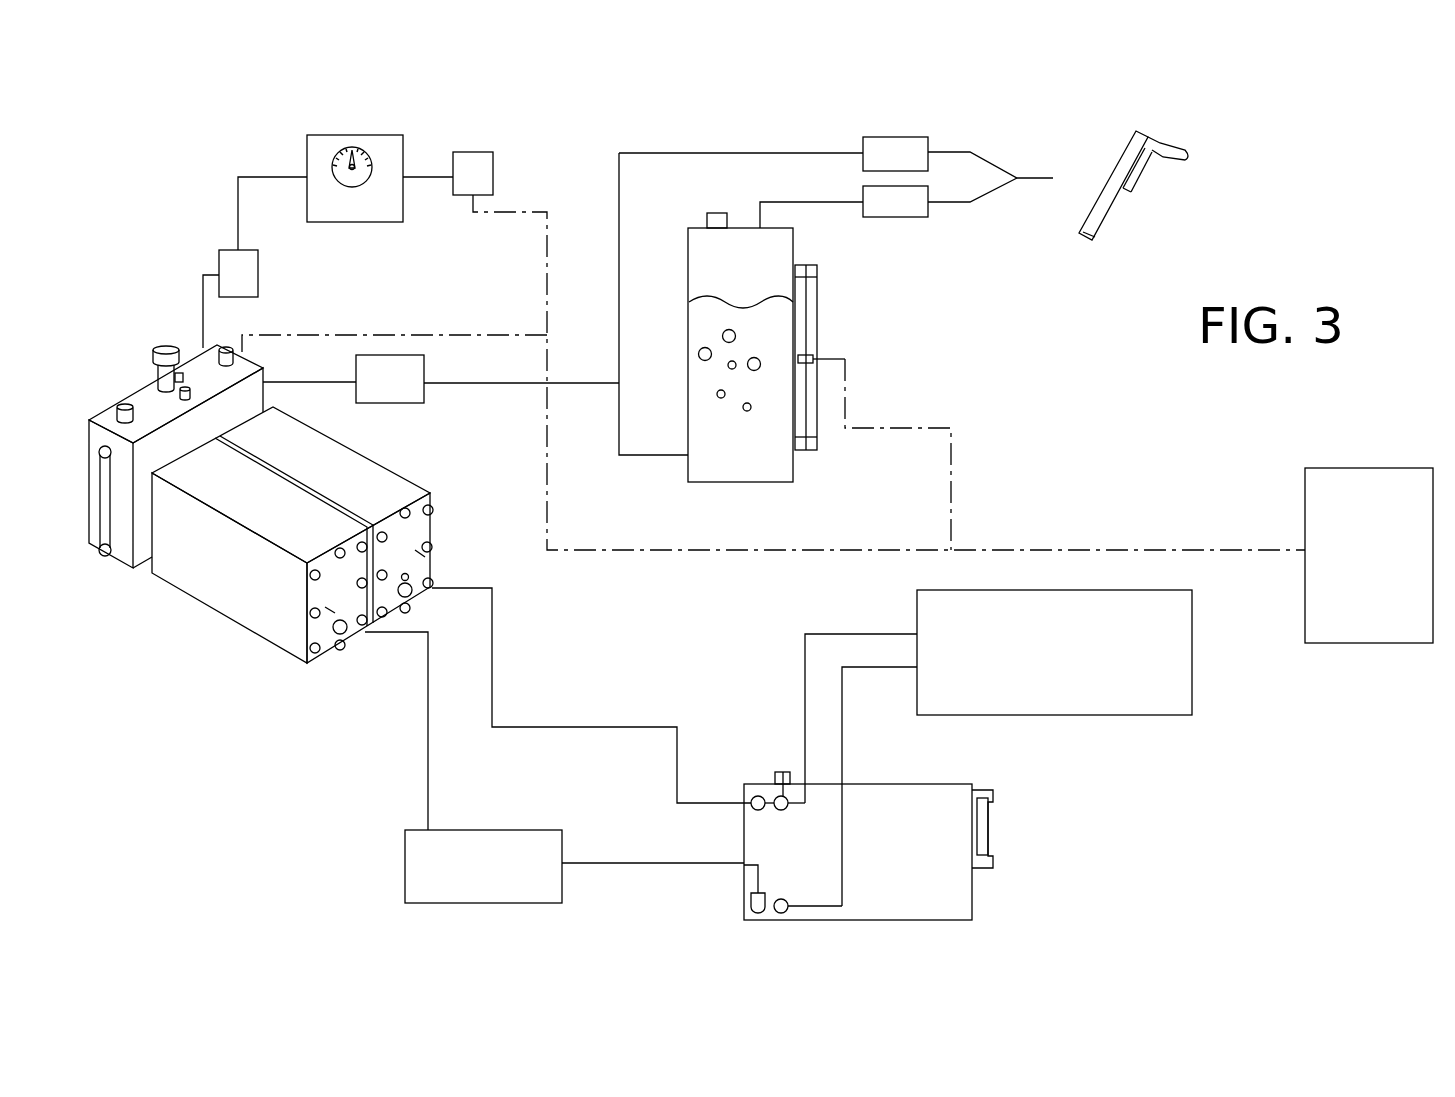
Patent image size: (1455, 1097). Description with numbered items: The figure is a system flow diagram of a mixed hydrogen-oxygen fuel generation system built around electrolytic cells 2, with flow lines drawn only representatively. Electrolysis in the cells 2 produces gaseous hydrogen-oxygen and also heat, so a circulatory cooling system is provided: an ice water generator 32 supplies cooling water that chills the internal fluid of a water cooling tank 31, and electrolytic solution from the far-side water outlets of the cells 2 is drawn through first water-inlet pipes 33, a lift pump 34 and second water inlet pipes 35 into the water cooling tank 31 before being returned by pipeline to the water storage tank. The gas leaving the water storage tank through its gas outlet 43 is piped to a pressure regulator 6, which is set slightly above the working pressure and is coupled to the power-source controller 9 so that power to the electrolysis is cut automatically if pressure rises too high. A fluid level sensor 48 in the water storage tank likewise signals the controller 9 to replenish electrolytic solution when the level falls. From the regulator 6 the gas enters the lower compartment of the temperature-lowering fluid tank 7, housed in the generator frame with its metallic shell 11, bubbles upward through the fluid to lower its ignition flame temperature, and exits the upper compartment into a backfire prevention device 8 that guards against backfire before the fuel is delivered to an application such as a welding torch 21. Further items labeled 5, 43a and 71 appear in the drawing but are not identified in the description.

The electrolytic cell 2 is at (202, 587).
The pressure gauge 5 is at (360, 213).
The pressure regulator 6 is at (448, 173).
The temperature-lowering fluid tank 7 is at (703, 255).
The metallic shell 11 is at (741, 409).
The backfire prevention device 8 is at (836, 182).
The power-source controller 9 is at (1369, 555).
The welding torch 21 is at (1122, 173).
The water cooling tank 31 is at (867, 784).
The ice water generator 32 is at (998, 748).
The first water-inlet pipes 33 is at (428, 750).
The lift pump 34 is at (483, 866).
The second water inlet pipes 35 is at (620, 862).
The gas outlet 43 is at (198, 372).
The valve 43a is at (441, 379).
The fluid level sensor 48 is at (817, 358).
The level indicator 71 is at (782, 315).